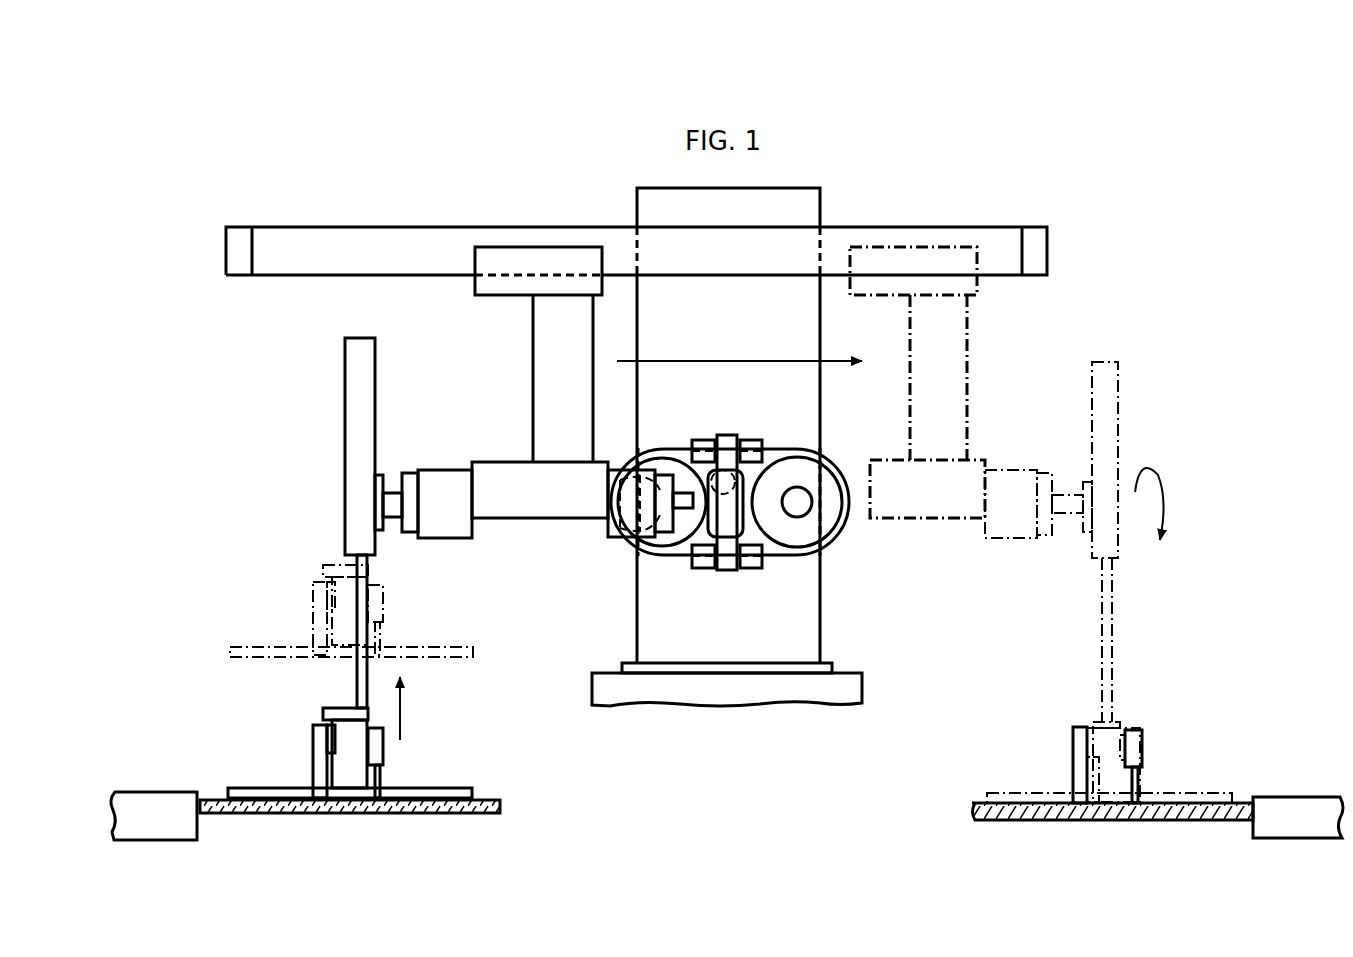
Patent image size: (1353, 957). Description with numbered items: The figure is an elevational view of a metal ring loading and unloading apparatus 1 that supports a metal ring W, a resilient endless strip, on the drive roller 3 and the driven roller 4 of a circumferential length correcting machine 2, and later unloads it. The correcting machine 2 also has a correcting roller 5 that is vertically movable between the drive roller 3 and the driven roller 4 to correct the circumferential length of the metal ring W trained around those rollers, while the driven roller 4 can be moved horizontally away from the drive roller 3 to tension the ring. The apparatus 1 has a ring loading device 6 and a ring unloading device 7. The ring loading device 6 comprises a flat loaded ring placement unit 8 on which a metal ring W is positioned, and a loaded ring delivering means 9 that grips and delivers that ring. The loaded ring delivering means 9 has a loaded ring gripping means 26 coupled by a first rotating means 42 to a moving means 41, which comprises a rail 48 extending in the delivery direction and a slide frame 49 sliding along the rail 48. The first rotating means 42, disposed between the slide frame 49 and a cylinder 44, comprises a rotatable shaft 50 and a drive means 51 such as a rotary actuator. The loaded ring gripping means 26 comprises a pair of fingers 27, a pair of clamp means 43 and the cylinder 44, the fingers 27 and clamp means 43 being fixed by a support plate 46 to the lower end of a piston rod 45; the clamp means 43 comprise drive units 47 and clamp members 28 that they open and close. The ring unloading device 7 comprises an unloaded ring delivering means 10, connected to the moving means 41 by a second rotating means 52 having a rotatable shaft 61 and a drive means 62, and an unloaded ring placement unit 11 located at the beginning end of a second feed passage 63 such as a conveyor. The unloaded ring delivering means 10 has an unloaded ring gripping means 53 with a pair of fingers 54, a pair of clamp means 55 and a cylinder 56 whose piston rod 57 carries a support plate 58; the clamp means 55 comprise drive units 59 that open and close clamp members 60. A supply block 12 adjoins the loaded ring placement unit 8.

The metal ring loading and unloading apparatus 1 is at (998, 190).
The circumferential length correcting machine 2 is at (805, 188).
The drive roller 3 is at (833, 518).
The driven roller 4 is at (660, 462).
The correcting roller 5 is at (750, 468).
The ring loading device 6 is at (217, 610).
The ring unloading device 7 is at (1258, 605).
The loaded ring placement unit 8 is at (280, 780).
The loaded ring delivering means 9 is at (300, 470).
The unloaded ring delivering means 10 is at (598, 565).
The unloaded ring placement unit 11 is at (1025, 785).
The supply block 12 is at (178, 792).
The loaded ring gripping means 26 is at (310, 578).
The fingers 27 is at (312, 615).
The clamp members 28 is at (385, 780).
The moving means 41 is at (432, 220).
The first rotating means 42 is at (443, 462).
The clamp means 43 is at (387, 590).
The cylinder 44 is at (355, 375).
The piston rod 45 is at (375, 660).
The support plate 46 is at (340, 710).
The drive units 47 is at (382, 705).
The rail 48 is at (318, 240).
The slide frame 49 is at (548, 428).
The rotatable shaft 50 is at (392, 500).
The drive means 51 is at (445, 515).
The second rotating means 52 is at (1040, 547).
The unloaded ring gripping means 53 is at (743, 637).
The fingers 54 is at (745, 440).
The clamp means 55 is at (702, 435).
The cylinder 56 is at (742, 523).
The piston rod 57 is at (1112, 605).
The support plate 58 is at (720, 567).
The drive units 59 is at (1138, 760).
The clamp members 60 is at (1140, 785).
The rotatable shaft 61 is at (666, 545).
The drive means 62 is at (622, 535).
The second feed passage 63 is at (1298, 797).
The metal ring W is at (445, 648).